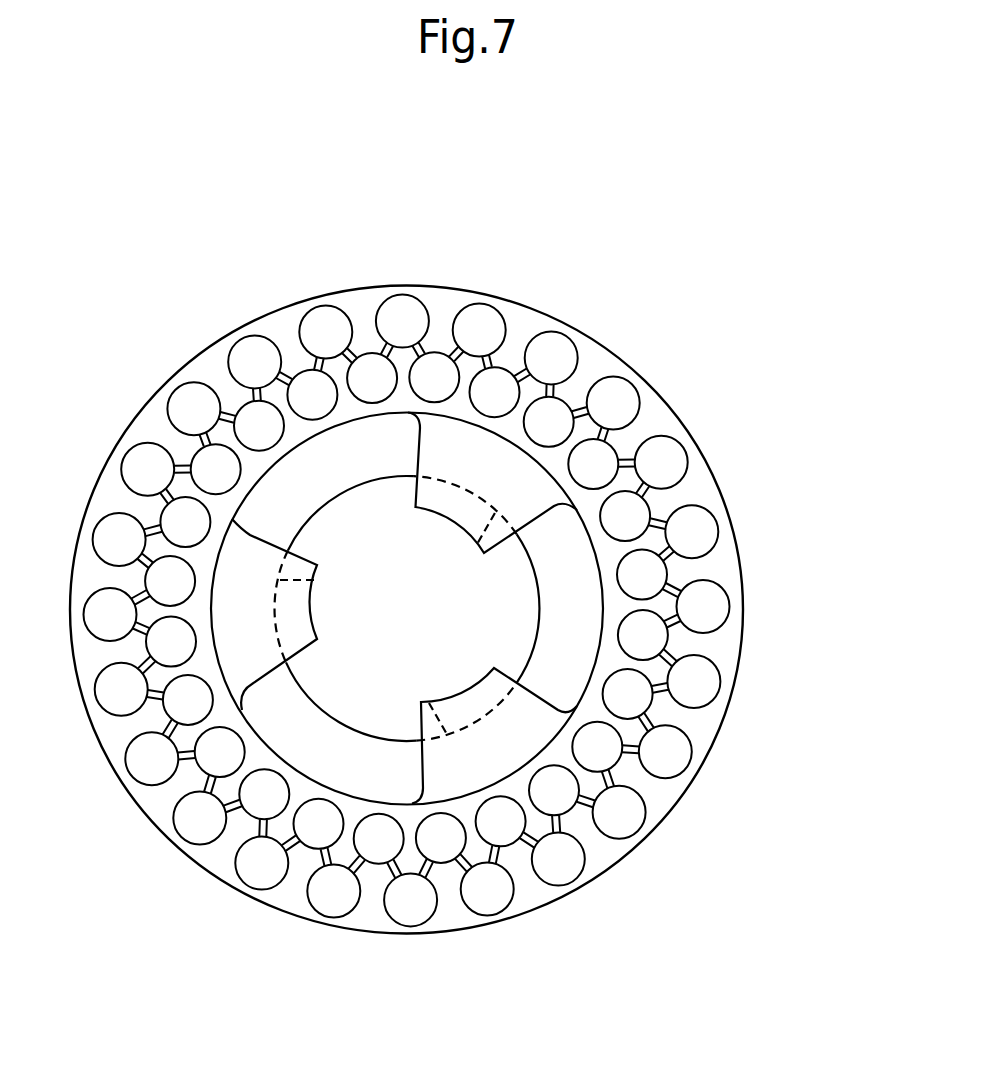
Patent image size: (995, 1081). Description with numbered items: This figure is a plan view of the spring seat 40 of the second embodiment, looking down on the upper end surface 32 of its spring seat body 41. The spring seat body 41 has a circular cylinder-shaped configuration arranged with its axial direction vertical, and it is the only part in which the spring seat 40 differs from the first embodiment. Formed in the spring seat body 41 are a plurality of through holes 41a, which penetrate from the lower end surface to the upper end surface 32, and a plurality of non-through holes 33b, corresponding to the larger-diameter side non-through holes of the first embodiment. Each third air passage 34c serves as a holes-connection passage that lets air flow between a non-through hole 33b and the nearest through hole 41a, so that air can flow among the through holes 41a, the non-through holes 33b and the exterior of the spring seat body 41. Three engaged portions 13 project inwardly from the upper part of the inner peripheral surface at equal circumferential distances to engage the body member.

The engaged portion 13 is at (467, 520).
The upper end surface 32 is at (705, 732).
The non-through hole 33b is at (547, 337).
The third air passage 34c is at (454, 350).
The spring seat 40 is at (474, 557).
The spring seat body 41 is at (470, 553).
The through hole 41a is at (483, 378).